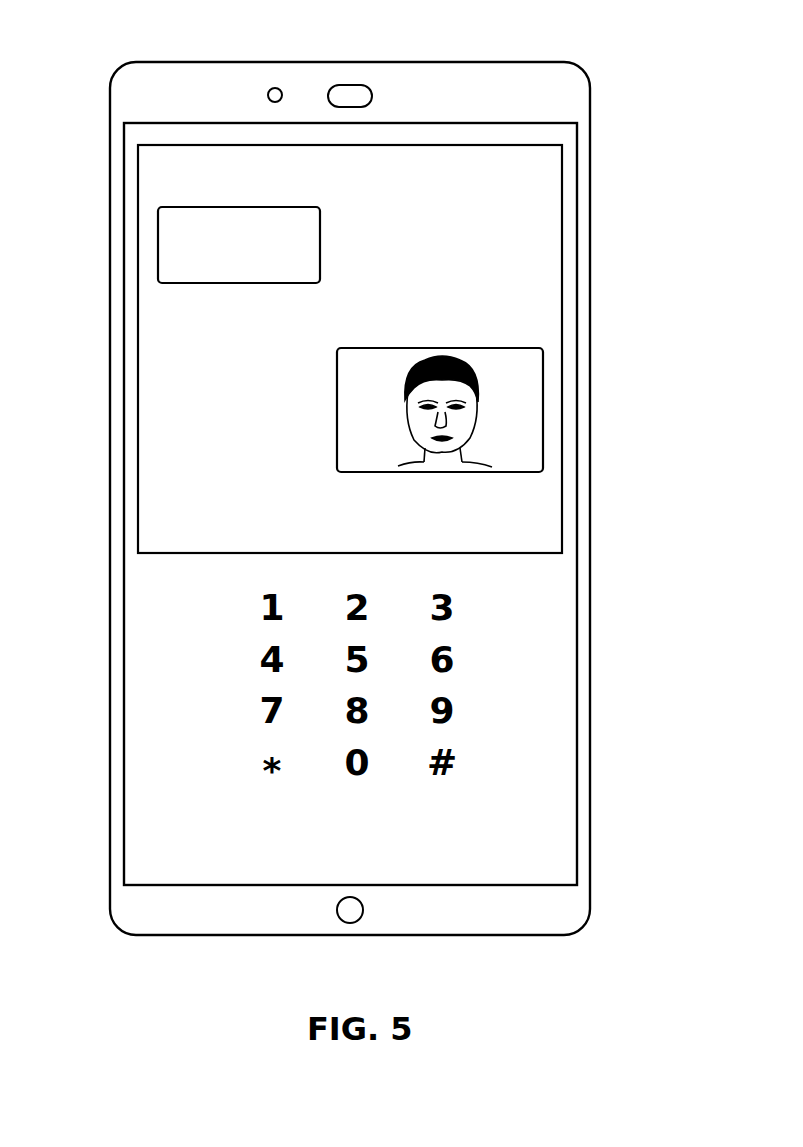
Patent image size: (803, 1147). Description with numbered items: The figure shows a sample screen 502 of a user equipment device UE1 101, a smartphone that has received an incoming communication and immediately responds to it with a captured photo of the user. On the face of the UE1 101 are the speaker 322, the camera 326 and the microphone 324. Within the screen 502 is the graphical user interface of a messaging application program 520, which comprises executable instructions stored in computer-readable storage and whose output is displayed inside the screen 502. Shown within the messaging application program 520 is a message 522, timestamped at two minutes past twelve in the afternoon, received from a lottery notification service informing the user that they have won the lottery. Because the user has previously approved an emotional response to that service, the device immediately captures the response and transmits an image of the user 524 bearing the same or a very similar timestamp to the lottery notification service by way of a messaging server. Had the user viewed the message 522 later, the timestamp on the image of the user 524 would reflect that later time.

The user equipment device UE1 101 is at (497, 62).
The speaker 322 is at (350, 84).
The camera 326 is at (274, 88).
The microphone 324 is at (352, 923).
The screen 502 is at (124, 132).
The messaging application program 520 is at (138, 183).
The message 522 is at (158, 263).
The image of the user 524 is at (543, 399).